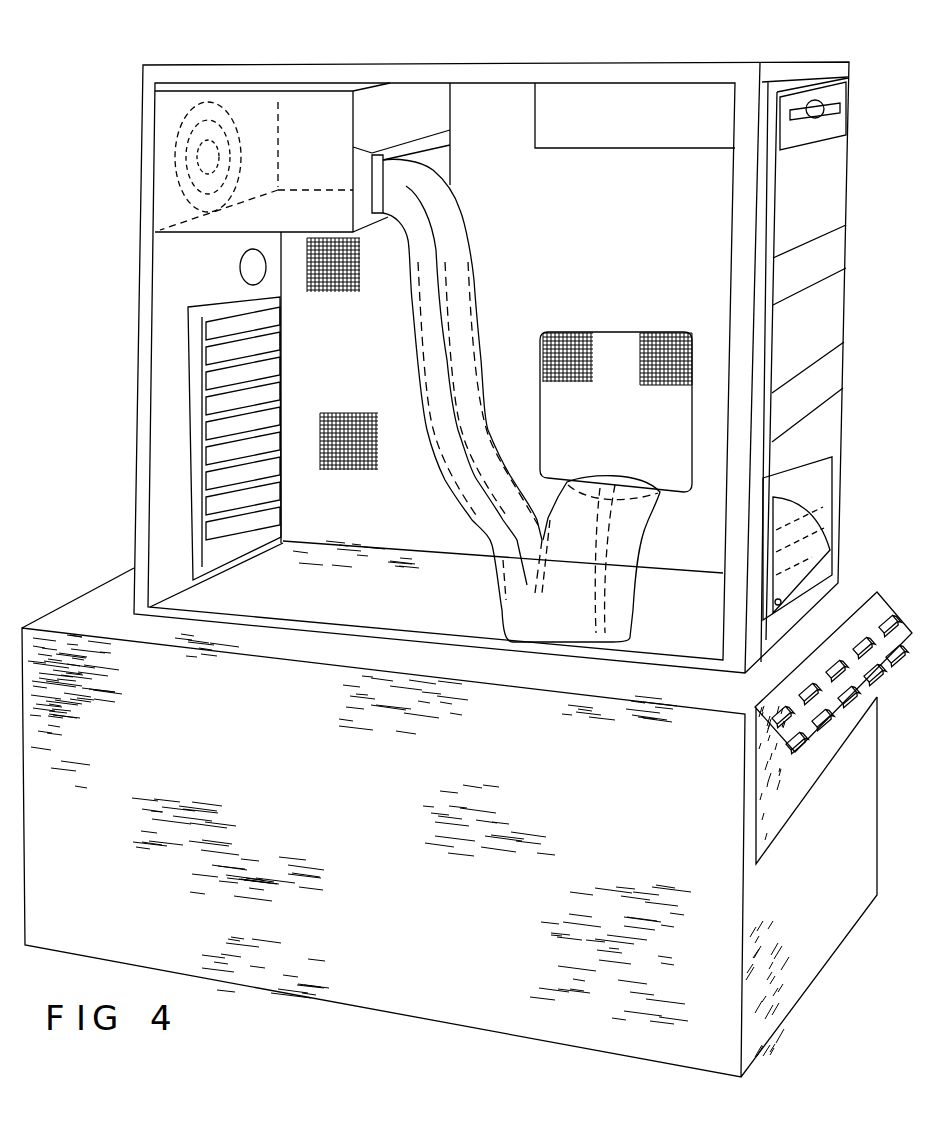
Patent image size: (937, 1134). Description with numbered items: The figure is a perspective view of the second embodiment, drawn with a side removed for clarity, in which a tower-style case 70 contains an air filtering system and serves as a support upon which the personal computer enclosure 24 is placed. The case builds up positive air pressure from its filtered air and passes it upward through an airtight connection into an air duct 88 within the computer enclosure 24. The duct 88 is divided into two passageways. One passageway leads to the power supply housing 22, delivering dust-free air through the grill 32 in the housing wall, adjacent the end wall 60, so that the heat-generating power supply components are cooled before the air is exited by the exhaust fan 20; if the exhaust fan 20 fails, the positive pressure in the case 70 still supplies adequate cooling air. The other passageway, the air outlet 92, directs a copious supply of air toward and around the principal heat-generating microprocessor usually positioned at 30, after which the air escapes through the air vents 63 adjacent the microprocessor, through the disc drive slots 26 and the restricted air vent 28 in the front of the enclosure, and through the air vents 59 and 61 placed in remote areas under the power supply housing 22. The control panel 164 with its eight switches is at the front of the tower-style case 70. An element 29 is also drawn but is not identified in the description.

The computer enclosure 24 is at (252, 65).
The exhaust fan 20 is at (173, 147).
The power supply housing 22 is at (240, 234).
The end wall 60 is at (463, 100).
The grill 32 is at (442, 160).
The disc drive slots 26 is at (843, 113).
The air vent 61 is at (338, 293).
The air vent 59 is at (365, 472).
The air vents 63 is at (562, 332).
The microprocessor location 30 is at (625, 447).
The air outlet passageway 92 is at (661, 505).
The air duct 88 is at (510, 622).
The air vent 28 is at (818, 483).
The door 29 is at (827, 547).
The control panel 164 is at (892, 613).
The tower-style case 70 is at (60, 607).